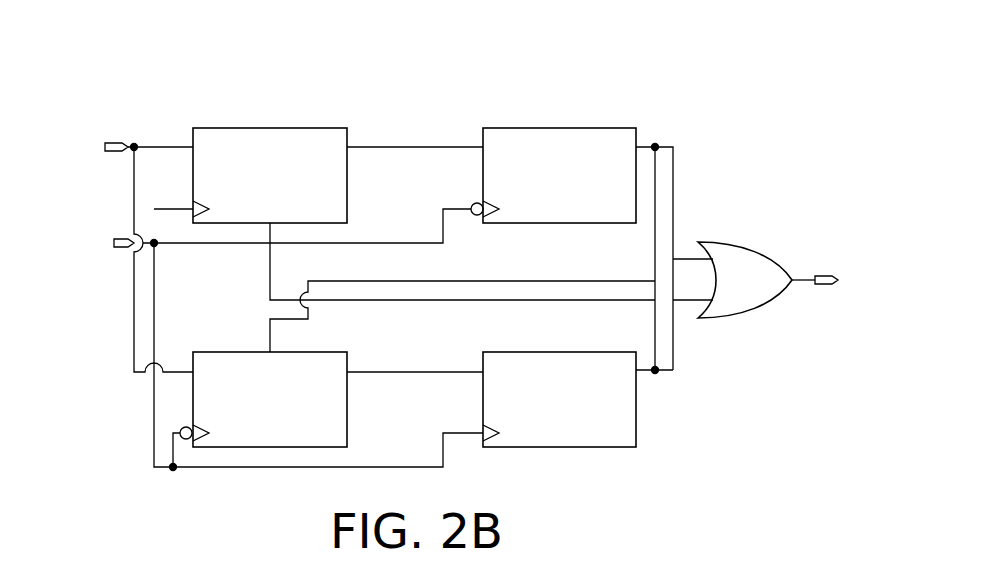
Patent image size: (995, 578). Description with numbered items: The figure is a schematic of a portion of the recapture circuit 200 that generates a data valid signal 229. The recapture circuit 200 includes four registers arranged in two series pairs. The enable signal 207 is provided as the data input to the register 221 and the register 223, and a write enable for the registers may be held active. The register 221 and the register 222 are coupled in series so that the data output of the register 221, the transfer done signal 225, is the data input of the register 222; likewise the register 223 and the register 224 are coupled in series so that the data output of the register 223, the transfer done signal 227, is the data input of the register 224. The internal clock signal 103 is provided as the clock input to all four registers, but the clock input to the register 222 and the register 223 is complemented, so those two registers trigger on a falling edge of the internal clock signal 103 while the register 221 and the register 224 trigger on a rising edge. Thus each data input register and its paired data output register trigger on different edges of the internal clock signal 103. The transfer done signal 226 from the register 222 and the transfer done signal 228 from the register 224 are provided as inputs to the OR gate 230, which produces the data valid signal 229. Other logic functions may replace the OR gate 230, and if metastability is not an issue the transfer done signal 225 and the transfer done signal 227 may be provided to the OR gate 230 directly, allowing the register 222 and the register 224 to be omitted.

The recapture circuit 200 is at (636, 52).
The enable signal 207 is at (51, 167).
The internal clock signal 103 is at (66, 271).
The register 221 is at (255, 194).
The register 222 is at (544, 194).
The register 223 is at (255, 418).
The register 224 is at (544, 418).
The transfer done signal 225 is at (383, 147).
The transfer done signal 226 is at (664, 147).
The transfer done signal 227 is at (385, 372).
The transfer done signal 228 is at (673, 353).
The data valid signal 229 is at (848, 309).
The OR gate 230 is at (743, 289).